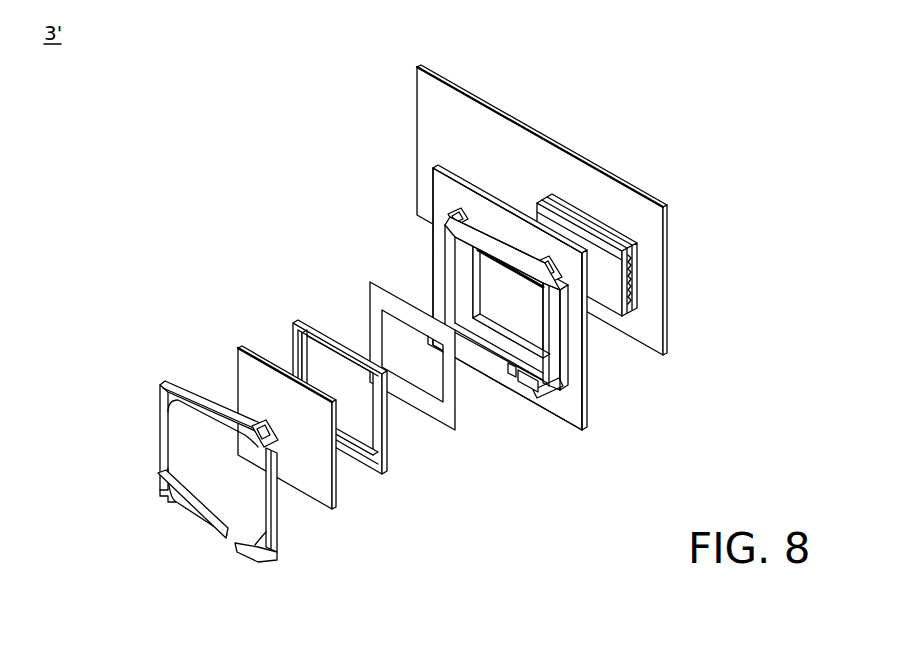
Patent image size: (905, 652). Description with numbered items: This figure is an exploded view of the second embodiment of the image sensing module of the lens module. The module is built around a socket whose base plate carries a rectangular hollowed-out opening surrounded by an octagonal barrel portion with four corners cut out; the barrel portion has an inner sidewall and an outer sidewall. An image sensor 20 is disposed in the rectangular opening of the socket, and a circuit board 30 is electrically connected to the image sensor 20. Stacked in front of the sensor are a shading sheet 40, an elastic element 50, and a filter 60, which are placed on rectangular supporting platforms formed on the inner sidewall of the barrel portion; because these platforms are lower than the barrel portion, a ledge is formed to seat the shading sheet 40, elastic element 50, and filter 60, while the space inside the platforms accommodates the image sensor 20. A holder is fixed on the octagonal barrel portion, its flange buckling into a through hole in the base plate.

The image sensor 20 is at (573, 233).
The circuit board 30 is at (665, 313).
The shading sheet 40 is at (372, 295).
The elastic element 50 is at (293, 333).
The filter 60 is at (238, 366).